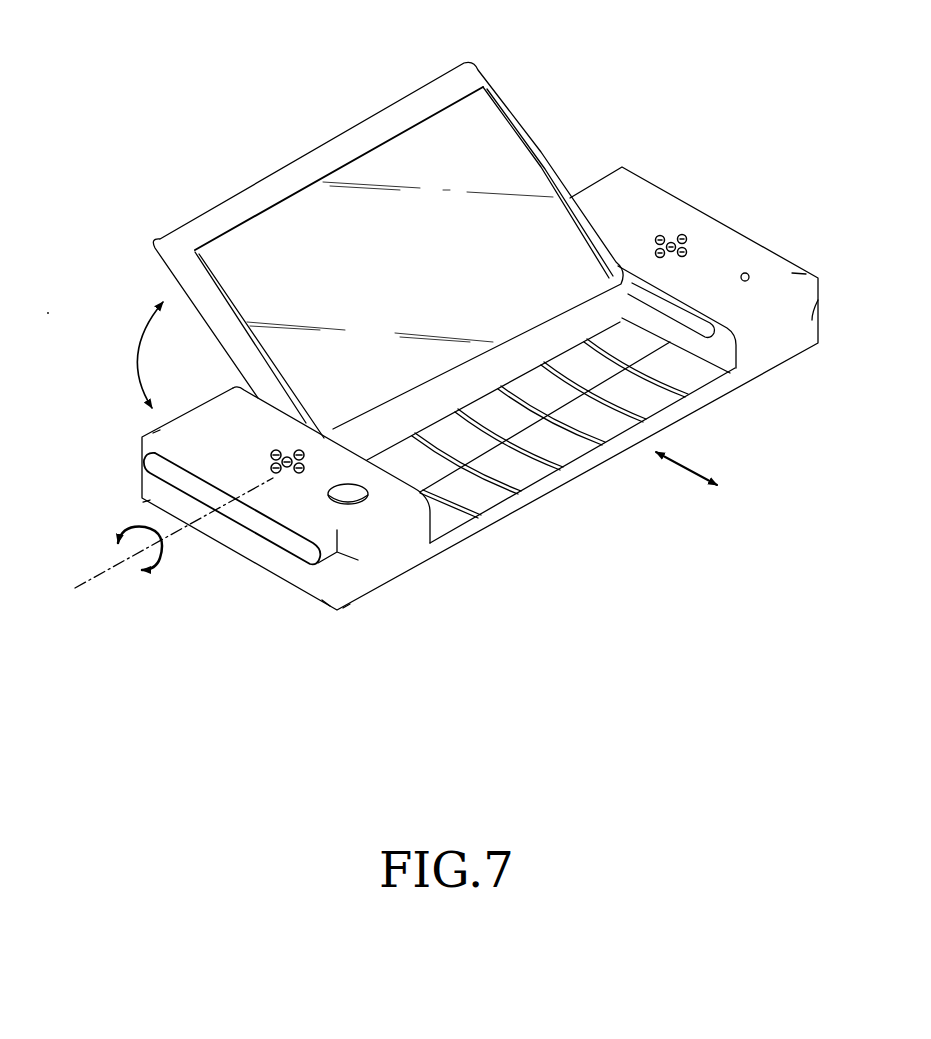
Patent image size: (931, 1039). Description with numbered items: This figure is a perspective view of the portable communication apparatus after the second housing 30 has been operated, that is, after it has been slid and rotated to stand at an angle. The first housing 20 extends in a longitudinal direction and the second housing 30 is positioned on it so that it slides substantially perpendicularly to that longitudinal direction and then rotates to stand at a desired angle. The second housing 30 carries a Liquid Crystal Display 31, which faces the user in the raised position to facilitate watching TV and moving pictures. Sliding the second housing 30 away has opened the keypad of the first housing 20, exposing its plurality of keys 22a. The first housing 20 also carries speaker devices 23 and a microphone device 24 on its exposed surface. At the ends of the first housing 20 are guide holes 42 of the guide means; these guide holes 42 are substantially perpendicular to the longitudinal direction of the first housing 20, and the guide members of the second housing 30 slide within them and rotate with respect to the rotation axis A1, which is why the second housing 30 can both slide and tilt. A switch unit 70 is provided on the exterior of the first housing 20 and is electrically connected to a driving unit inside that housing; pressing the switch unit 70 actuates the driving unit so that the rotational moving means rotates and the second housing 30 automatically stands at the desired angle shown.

The first housing 20 is at (789, 373).
The keys 22a is at (527, 473).
The speaker devices 23 is at (684, 236).
The microphone device 24 is at (749, 274).
The second housing 30 is at (291, 160).
The Liquid Crystal Display (LCD) 31 is at (423, 147).
The guide holes 42 is at (287, 535).
The switch unit 70 is at (362, 507).
The rotation axis A1 is at (102, 573).